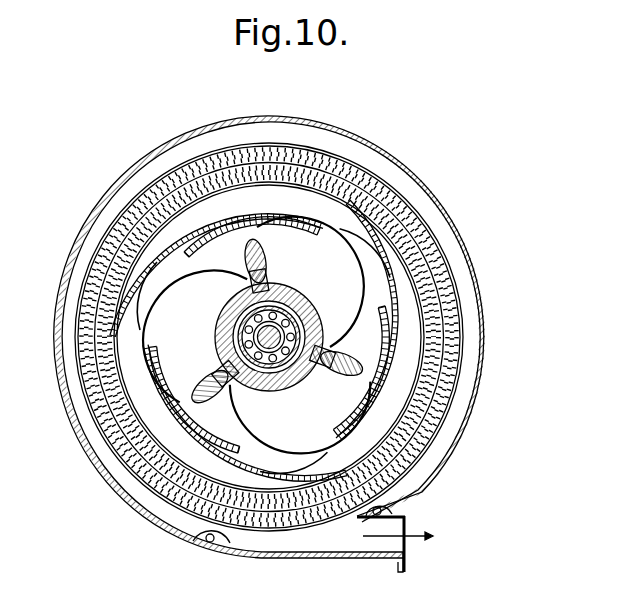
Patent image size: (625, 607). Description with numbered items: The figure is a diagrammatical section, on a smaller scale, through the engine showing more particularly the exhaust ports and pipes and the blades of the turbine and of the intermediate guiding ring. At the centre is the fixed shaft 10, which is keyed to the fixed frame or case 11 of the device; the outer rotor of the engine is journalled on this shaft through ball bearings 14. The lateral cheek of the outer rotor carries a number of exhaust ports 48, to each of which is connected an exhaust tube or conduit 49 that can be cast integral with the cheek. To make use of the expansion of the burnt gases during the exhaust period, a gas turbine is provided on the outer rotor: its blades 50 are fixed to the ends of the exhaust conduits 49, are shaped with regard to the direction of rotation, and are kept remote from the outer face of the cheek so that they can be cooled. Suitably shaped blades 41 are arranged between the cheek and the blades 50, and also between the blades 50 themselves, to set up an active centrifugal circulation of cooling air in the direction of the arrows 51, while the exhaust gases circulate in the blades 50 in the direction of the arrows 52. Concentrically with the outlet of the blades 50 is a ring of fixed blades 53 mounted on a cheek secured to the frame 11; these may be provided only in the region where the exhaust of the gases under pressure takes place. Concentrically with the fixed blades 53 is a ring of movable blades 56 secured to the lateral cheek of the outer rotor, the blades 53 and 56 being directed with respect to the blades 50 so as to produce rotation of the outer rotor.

The fixed shaft 10 is at (269, 353).
The fixed frame or case 11 is at (417, 495).
The ball bearings 14 is at (243, 338).
The blades 41 is at (355, 223).
The exhaust ports 48 is at (258, 237).
The exhaust tubes or conduits 49 is at (498, 387).
The turbine blades 50 is at (158, 213).
The arrows indicating air circulation 51 is at (170, 255).
The arrows indicating exhaust gas flow 52 is at (188, 263).
The fixed blades 53 is at (197, 192).
The movable blades 56 is at (343, 162).